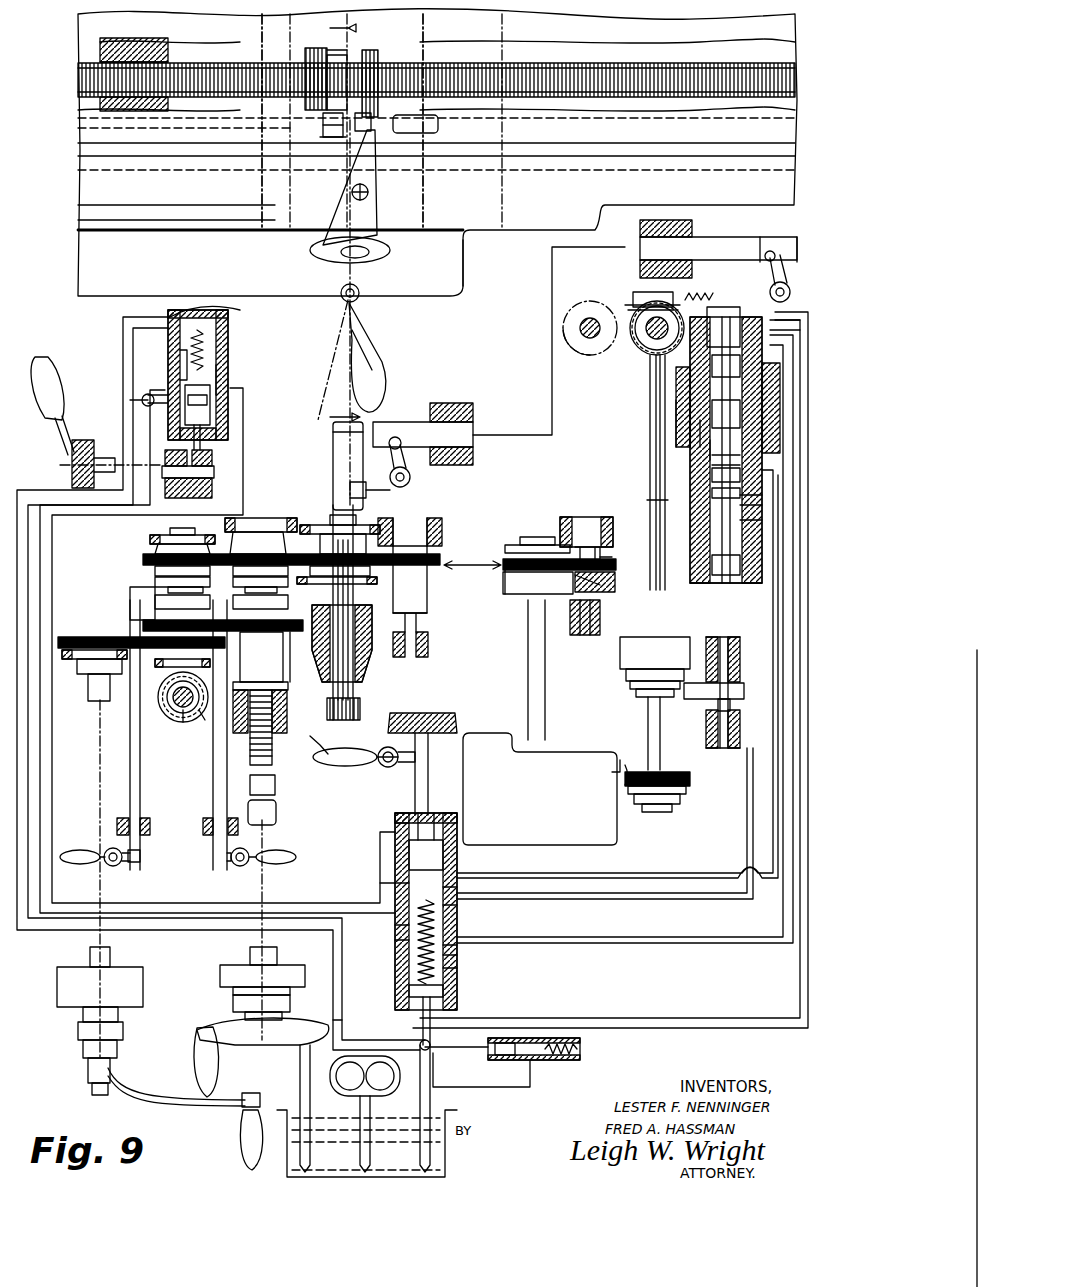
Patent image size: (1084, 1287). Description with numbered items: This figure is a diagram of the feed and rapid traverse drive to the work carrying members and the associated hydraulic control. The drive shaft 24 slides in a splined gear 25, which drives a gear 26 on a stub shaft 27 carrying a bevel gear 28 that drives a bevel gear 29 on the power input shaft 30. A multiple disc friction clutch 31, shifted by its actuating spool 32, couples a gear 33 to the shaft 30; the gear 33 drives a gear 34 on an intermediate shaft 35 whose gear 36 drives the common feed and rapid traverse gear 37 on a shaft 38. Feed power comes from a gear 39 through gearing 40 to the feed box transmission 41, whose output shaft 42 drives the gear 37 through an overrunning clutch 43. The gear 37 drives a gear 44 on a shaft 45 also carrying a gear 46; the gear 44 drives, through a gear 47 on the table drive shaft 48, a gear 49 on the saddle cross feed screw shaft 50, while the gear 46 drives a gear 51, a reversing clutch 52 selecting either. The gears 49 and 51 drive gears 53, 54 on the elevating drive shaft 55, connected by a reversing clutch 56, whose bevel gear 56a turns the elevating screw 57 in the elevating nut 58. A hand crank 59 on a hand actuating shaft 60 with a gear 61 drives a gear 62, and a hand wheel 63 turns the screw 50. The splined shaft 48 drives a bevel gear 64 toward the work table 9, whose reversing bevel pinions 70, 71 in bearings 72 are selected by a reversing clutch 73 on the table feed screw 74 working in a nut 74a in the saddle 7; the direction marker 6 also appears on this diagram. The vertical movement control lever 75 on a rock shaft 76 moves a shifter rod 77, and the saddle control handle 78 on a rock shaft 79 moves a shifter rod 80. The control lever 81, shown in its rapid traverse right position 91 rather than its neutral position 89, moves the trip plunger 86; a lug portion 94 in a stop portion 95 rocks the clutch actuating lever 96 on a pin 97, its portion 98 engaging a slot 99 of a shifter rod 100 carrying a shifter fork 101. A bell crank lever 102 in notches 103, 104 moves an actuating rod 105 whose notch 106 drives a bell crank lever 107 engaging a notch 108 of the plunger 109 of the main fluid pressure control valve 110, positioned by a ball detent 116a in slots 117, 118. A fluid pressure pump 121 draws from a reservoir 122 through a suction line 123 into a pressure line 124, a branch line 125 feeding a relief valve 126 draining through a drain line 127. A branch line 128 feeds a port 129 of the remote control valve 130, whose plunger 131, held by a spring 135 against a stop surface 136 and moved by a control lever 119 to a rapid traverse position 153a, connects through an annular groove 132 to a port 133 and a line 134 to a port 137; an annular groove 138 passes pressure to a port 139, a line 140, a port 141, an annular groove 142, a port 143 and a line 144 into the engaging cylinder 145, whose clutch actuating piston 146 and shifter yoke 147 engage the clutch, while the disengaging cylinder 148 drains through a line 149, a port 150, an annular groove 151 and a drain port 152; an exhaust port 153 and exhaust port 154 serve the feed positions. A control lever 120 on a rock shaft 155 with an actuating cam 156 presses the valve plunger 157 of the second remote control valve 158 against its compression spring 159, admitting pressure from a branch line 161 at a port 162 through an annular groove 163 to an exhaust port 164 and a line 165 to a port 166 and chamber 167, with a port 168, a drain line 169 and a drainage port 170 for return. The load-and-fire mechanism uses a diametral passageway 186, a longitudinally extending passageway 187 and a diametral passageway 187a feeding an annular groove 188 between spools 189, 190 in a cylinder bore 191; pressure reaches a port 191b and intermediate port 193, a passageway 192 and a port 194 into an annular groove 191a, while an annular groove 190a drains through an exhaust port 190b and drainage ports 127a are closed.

The direction arrow 6 is at (342, 221).
The saddle 7 is at (463, 272).
The work table 9 is at (88, 188).
The drive shaft 24 is at (588, 322).
The gear 25 is at (575, 352).
The gear 26 is at (657, 328).
The stub shaft 27 is at (632, 308).
The bevel gear 28 is at (636, 300).
The bevel gear 29 is at (640, 292).
The power input shaft 30 is at (602, 550).
The multiple disc friction clutch 31 is at (655, 667).
The actuating spool 32 is at (636, 703).
The gear 33 is at (607, 584).
The gear 34 is at (580, 640).
The intermediate shaft 35 is at (584, 520).
The gear 36 is at (614, 559).
The common feed and rapid traverse gear 37 is at (500, 575).
The shaft 38 is at (535, 545).
The gear 39 is at (690, 778).
The gearing 40 is at (624, 760).
The feed box transmission 41 is at (540, 789).
The output shaft 42 is at (536, 705).
The overrunning clutch 43 is at (559, 579).
The gear 44 is at (450, 563).
The shaft 45 is at (410, 579).
The gear 46 is at (428, 640).
The gear 47 is at (378, 535).
The table drive shaft 48 is at (356, 596).
The gear 49 is at (325, 526).
The saddle cross feed screw shaft 50 is at (276, 810).
The gear 51 is at (298, 657).
The reversing clutch 52 is at (288, 590).
The gear 53 is at (143, 559).
The gear 54 is at (143, 625).
The elevating drive shaft 55 is at (188, 528).
The reversing clutch 56 is at (226, 563).
The bevel gear 56a is at (158, 680).
The elevating screw 57 is at (183, 722).
The elevating nut 58 is at (205, 722).
The hand crank 59 is at (165, 1100).
The hand actuating shaft 60 is at (110, 958).
The gear 61 is at (80, 645).
The gear 62 is at (260, 661).
The hand wheel 63 is at (210, 1028).
The bevel gear 64 is at (370, 665).
The reversing bevel pinion 70 is at (315, 50).
The reversing bevel pinion 71 is at (378, 60).
The bearings 72 is at (430, 55).
The reversing clutch 73 is at (331, 31).
The table feed screw 74 is at (548, 78).
The nut 74a is at (168, 48).
The vertical movement control lever 75 is at (72, 852).
The rock shaft 76 is at (114, 866).
The shifter rod 77 is at (140, 796).
The saddle control handle 78 is at (285, 852).
The rock shaft 79 is at (240, 866).
The shifter rod 80 is at (213, 800).
The combined feed and rapid traverse control lever 81 is at (378, 360).
The trip plunger 86 is at (333, 462).
The neutral position 89 is at (338, 372).
The rapid traverse right position 91 is at (380, 345).
The lug portion 94 is at (341, 293).
The stop portion 95 is at (390, 246).
The clutch actuating lever 96 is at (378, 210).
The pin 97 is at (369, 190).
The portion 98 is at (372, 128).
The slot 99 is at (333, 139).
The shifter rod 100 is at (320, 137).
The shifter fork 101 is at (326, 137).
The bell crank lever 102 is at (410, 482).
The notch 103 is at (350, 482).
The notch 104 is at (398, 438).
The actuating rod 105 is at (499, 356).
The notch 106 is at (770, 240).
The bell crank lever 107 is at (794, 278).
The notch 108 is at (767, 260).
The plunger 109 is at (726, 450).
The main fluid pressure control valve 110 is at (721, 416).
The ball detent 116a is at (700, 292).
The slot 117 is at (718, 248).
The slot 118 is at (725, 327).
The control lever 119 is at (338, 766).
The control lever 120 is at (50, 368).
The fluid pressure pump 121 is at (365, 1076).
The reservoir 122 is at (287, 1160).
The suction line 123 is at (370, 1101).
The pressure line 124 is at (345, 1023).
The branch line 125 is at (420, 1043).
The relief valve 126 is at (580, 1045).
The drain line 127 is at (433, 1068).
The drainage ports 127a is at (783, 318).
The branch line 128 is at (395, 928).
The port 129 is at (395, 943).
The remote control valve 130 is at (457, 856).
The plunger 131 is at (426, 841).
The annular groove 132 is at (443, 925).
The port 133 is at (457, 948).
The line 134 is at (457, 958).
The spring 135 is at (409, 993).
The stop surface 136 is at (457, 716).
The port 137 is at (762, 520).
The annular groove 138 is at (762, 505).
The port 139 is at (740, 583).
The line 140 is at (678, 880).
The port 141 is at (457, 888).
The annular groove 142 is at (380, 881).
The port 143 is at (457, 905).
The line 144 is at (560, 900).
The engaging cylinder 145 is at (740, 748).
The clutch actuating piston 146 is at (732, 705).
The shifter yoke 147 is at (740, 686).
The disengaging cylinder 148 is at (735, 665).
The line 149 is at (735, 659).
The port 150 is at (712, 492).
The annular groove 151 is at (702, 475).
The drain port 152 is at (764, 490).
The exhaust port 153 is at (605, 580).
The rapid traverse position 153a is at (368, 752).
The exhaust port 154 is at (457, 968).
The rock shaft 155 is at (96, 440).
The actuating cam 156 is at (204, 474).
The valve plunger 157 is at (198, 411).
The second remote control valve 158 is at (216, 333).
The compression spring 159 is at (205, 303).
The branch line 161 is at (290, 913).
The port 162 is at (180, 352).
The annular groove 163 is at (216, 400).
The exhaust port 164 is at (228, 385).
The line 165 is at (395, 855).
The port 166 is at (395, 828).
The chamber 167 is at (400, 818).
The port 168 is at (130, 400).
The drain line 169 is at (190, 928).
The drainage port 170 is at (168, 315).
The diametral passageway 186 is at (726, 565).
The longitudinally extending passageway 187 is at (650, 508).
The diametral passageway 187a is at (700, 425).
The annular groove 188 is at (710, 440).
The spool 189 is at (726, 374).
The spool 190 is at (723, 450).
The annular groove 190a is at (712, 455).
The exhaust port 190b is at (712, 465).
The cylinder bore 191 is at (656, 372).
The annular groove 191a is at (650, 365).
The port 191b is at (690, 410).
The passageway 192 is at (676, 400).
The intermediate port 193 is at (665, 390).
The port 194 is at (660, 380).